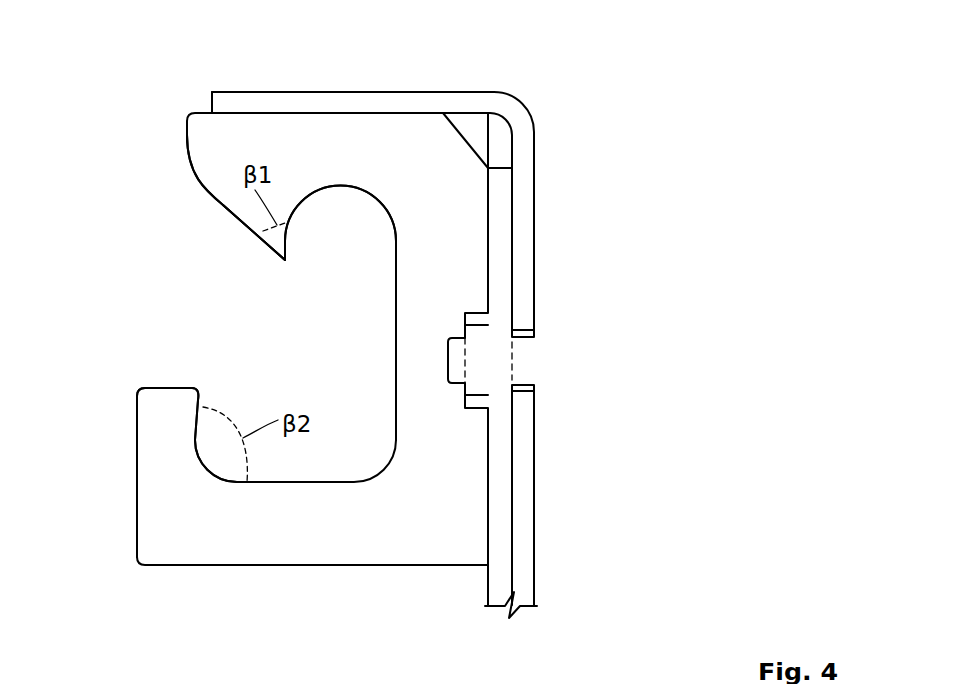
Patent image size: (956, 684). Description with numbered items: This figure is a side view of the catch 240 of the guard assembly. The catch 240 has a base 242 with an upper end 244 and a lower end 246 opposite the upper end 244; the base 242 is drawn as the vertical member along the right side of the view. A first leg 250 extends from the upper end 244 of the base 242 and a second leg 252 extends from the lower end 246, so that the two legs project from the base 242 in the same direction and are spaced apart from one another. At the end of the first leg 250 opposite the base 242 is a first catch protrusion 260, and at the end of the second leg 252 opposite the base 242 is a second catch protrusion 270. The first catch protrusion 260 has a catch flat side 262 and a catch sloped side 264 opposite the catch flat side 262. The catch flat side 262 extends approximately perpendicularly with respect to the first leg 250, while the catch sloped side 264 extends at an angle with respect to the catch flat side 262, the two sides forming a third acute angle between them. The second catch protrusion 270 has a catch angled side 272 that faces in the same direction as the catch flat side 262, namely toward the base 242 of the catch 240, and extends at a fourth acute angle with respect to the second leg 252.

The catch 240 is at (512, 55).
The base 242 is at (440, 321).
The upper end 244 is at (460, 168).
The lower end 246 is at (467, 535).
The first leg 250 is at (332, 137).
The second leg 252 is at (345, 512).
The first catch protrusion 260 is at (190, 160).
The catch flat side 262 is at (290, 243).
The catch sloped side 264 is at (230, 203).
The second catch protrusion 270 is at (137, 422).
The catch angled side 272 is at (205, 395).